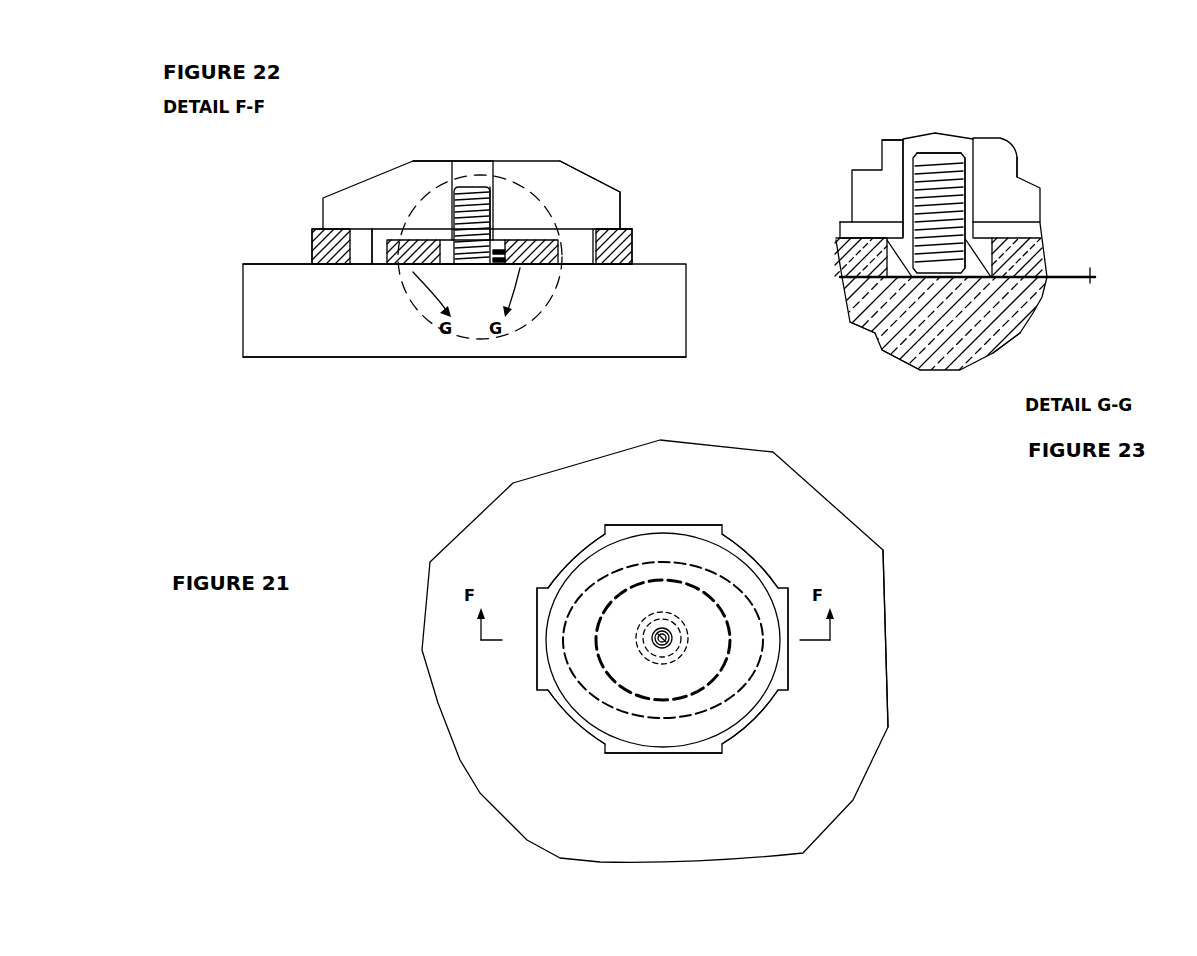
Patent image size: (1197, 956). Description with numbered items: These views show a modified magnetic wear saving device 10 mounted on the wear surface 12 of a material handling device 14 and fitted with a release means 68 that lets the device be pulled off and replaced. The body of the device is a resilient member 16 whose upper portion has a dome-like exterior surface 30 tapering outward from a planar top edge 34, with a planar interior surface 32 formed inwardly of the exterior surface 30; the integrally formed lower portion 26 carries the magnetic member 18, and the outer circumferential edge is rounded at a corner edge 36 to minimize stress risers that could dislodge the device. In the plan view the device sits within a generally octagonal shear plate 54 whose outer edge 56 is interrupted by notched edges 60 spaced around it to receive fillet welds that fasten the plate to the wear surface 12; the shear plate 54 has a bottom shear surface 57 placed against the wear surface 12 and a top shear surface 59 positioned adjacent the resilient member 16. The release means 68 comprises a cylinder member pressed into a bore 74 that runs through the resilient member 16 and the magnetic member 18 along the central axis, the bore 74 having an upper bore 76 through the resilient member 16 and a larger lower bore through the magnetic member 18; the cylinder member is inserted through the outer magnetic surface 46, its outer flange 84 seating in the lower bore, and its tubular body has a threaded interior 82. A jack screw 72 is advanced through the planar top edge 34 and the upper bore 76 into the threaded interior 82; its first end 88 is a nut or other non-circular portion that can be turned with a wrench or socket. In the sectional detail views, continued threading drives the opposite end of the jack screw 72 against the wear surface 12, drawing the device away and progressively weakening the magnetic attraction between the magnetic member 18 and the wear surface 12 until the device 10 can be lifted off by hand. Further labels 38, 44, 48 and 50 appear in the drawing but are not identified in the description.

In FIG. 22, the magnetic wear saving device 10 is at (586, 142).
In FIG. 23, the magnetic wear saving device 10 is at (1073, 146).
In FIG. 21, the magnetic wear saving device 10 is at (914, 503).
In FIG. 22, the wear surface 12 is at (275, 263).
In FIG. 23, the wear surface 12 is at (1090, 270).
In FIG. 22, the material handling device 14 is at (368, 366).
In FIG. 23, the material handling device 14 is at (921, 372).
In FIG. 21, the material handling device 14 is at (468, 759).
In FIG. 22, the resilient member 16 is at (600, 178).
In FIG. 23, the resilient member 16 is at (866, 172).
In FIG. 22, the magnetic member 18 is at (544, 276).
In FIG. 23, the magnetic member 18 is at (828, 266).
In FIG. 22, the lower portion 26 is at (577, 275).
In FIG. 22, the exterior surface 30 is at (378, 172).
In FIG. 21, the exterior surface 30 is at (647, 655).
In FIG. 22, the interior surface 32 is at (362, 228).
In FIG. 23, the interior surface 32 is at (840, 222).
In FIG. 22, the planar top edge 34 is at (427, 158).
In FIG. 22, the corner edge 36 is at (623, 228).
In FIG. 22, the step 38 is at (372, 265).
In FIG. 23, the step 38 is at (835, 243).
In FIG. 22, the nut insert 44 is at (535, 240).
In FIG. 23, the outer magnetic surface 46 is at (1048, 300).
In FIG. 23, the left support block 48 is at (843, 290).
In FIG. 23, the plate edge 50 is at (893, 280).
In FIG. 22, the shear plate 54 is at (311, 228).
In FIG. 21, the shear plate 54 is at (540, 657).
In FIG. 22, the outer edge 56 is at (633, 243).
In FIG. 21, the outer edge 56 is at (693, 527).
In FIG. 22, the bottom shear surface 57 is at (622, 265).
In FIG. 22, the top shear surface 59 is at (626, 229).
In FIG. 21, the top shear surface 59 is at (622, 528).
In FIG. 21, the notched edges 60 is at (552, 572).
In FIG. 22, the release means 68 is at (480, 178).
In FIG. 23, the release means 68 is at (937, 143).
In FIG. 21, the release means 68 is at (641, 664).
In FIG. 23, the jack screw 72 is at (907, 168).
In FIG. 21, the jack screw 72 is at (705, 755).
In FIG. 22, the bore 74 is at (467, 156).
In FIG. 23, the bore 74 is at (911, 132).
In FIG. 22, the upper bore 76 is at (490, 182).
In FIG. 23, the upper bore 76 is at (918, 356).
In FIG. 23, the threaded interior 82 is at (960, 185).
In FIG. 22, the outer flange 84 is at (451, 265).
In FIG. 23, the outer flange 84 is at (1000, 340).
In FIG. 23, the first end 88 is at (947, 157).
In FIG. 21, the first end 88 is at (654, 618).